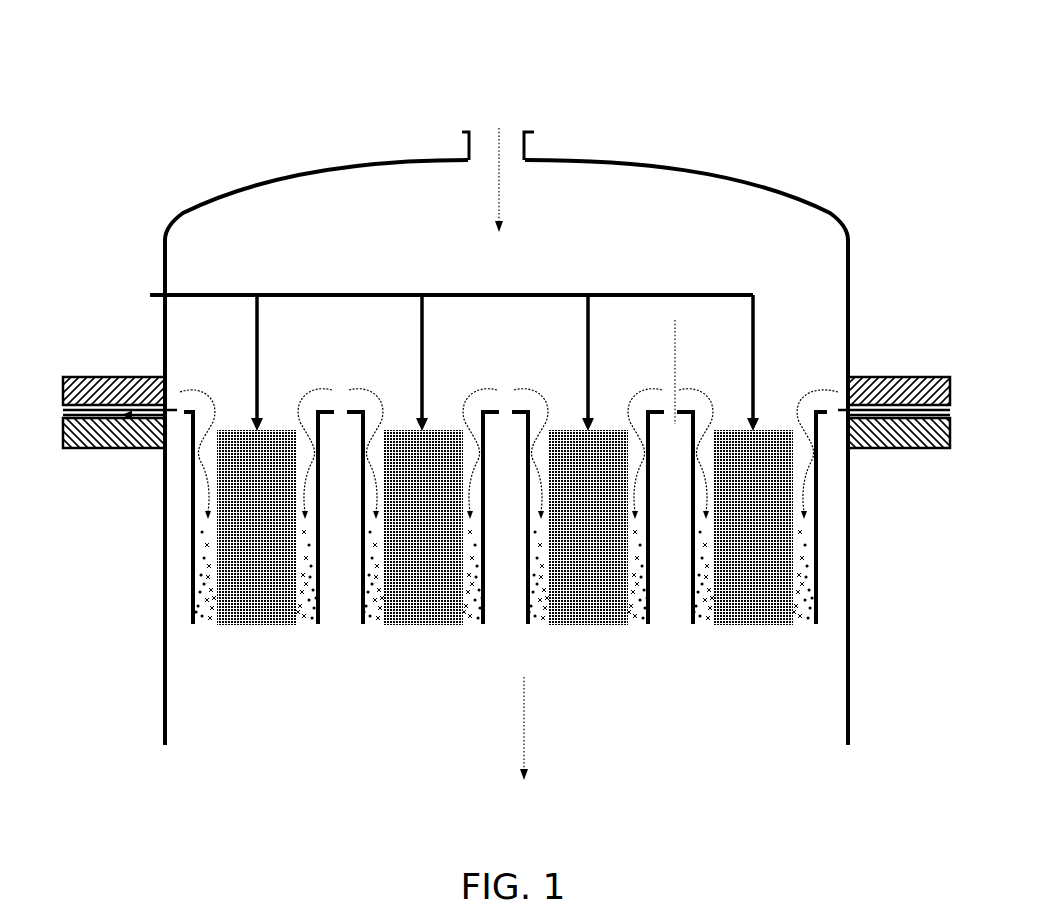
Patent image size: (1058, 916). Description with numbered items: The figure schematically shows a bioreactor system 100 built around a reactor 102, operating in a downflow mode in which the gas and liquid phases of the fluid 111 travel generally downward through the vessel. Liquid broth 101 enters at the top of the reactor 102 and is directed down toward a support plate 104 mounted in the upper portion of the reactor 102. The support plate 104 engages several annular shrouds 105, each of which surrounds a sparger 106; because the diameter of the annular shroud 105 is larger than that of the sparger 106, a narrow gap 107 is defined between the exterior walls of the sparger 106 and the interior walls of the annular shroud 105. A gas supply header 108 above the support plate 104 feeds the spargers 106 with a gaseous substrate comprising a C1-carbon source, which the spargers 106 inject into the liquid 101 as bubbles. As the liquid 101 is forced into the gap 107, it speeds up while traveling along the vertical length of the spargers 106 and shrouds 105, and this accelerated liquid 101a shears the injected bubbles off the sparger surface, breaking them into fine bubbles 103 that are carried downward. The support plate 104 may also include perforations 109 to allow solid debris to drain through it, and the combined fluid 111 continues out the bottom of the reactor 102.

The bioreactor system 100 is at (616, 90).
The liquid broth 101 is at (498, 165).
The accelerated liquid 101a is at (468, 394).
The reactor 102 is at (222, 194).
The fine bubbles 103 is at (200, 570).
The support plate 104 is at (112, 450).
The annular shroud 105 is at (482, 619).
The sparger 106 is at (760, 627).
The gap 107 is at (206, 622).
The header 108 is at (150, 295).
The perforations 109 is at (526, 364).
The fluid 111 is at (504, 728).